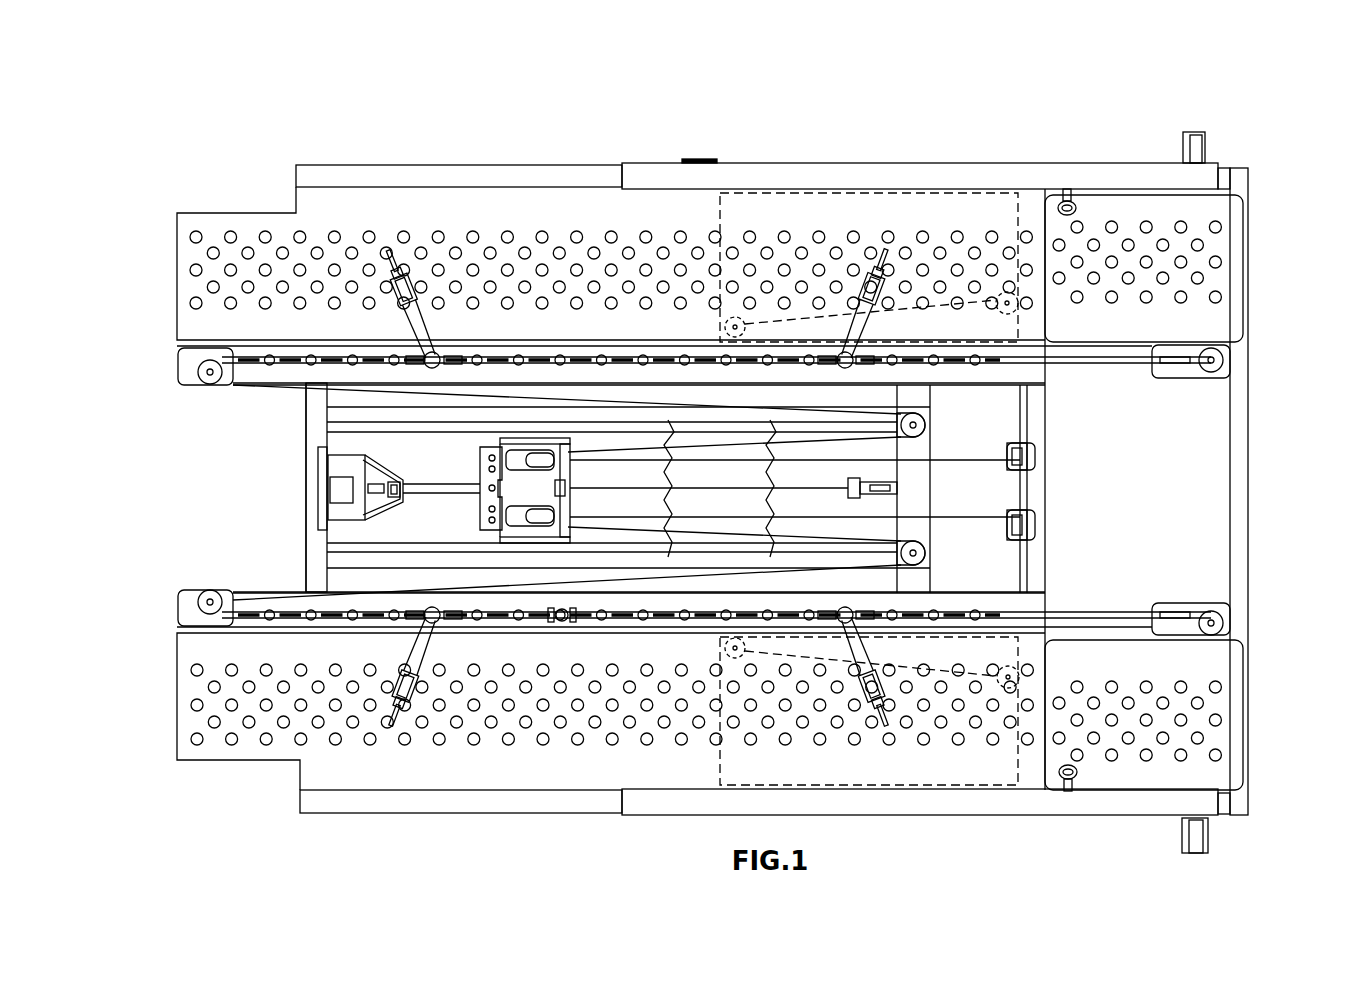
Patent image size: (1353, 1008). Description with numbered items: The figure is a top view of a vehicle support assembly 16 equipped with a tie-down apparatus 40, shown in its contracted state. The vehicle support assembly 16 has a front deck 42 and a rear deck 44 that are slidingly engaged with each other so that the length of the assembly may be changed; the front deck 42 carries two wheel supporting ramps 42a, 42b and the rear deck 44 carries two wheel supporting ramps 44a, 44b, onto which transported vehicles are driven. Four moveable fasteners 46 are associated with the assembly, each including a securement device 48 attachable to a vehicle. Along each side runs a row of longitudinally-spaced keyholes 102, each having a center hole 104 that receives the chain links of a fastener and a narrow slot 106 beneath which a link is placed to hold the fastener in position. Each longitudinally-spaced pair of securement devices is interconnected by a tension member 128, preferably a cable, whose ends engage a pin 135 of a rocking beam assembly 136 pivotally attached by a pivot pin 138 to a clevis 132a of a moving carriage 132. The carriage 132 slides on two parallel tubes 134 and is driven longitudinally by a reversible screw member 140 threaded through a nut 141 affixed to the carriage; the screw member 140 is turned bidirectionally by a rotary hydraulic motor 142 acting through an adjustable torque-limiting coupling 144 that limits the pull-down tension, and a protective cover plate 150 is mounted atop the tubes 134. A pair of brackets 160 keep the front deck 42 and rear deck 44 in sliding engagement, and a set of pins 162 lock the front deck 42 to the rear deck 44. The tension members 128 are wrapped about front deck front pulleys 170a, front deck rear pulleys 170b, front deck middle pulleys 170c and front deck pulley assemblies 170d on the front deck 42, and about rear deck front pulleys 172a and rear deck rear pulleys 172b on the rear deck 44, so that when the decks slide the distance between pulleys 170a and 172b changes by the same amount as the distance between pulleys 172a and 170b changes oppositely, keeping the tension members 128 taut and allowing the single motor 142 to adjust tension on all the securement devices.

The vehicle support assembly 16 is at (965, 133).
The tie-down apparatus 40 is at (529, 412).
The front deck 42 is at (557, 158).
The wheel supporting ramp 42a is at (493, 200).
The wheel supporting ramp 42b is at (497, 775).
The rear deck 44 is at (1140, 158).
The wheel supporting ramp 44a is at (1232, 227).
The wheel supporting ramp 44b is at (1232, 700).
The moveable fastener 46 is at (382, 233).
The securement device 48 is at (405, 285).
The keyhole 102 is at (670, 348).
The center hole 104 is at (563, 622).
The narrow slot 106 is at (552, 622).
The tension member 128 is at (698, 403).
The moving carriage 132 is at (570, 510).
The clevis 132a is at (485, 510).
The parallel tubes 134 is at (330, 420).
The pin 135 is at (498, 430).
The rocking beam assembly 136 is at (480, 527).
The pivot pin 138 is at (485, 470).
The reversible screw member 140 is at (422, 482).
The nut 141 is at (568, 488).
The rotary hydraulic motor 142 is at (335, 487).
The adjustable torque-limiting coupling 144 is at (380, 498).
The protective cover plate 150 is at (747, 504).
The bracket 160 is at (821, 178).
The pin 162 is at (1067, 200).
The front deck front pulley 170a is at (208, 385).
The front deck rear pulley 170b is at (1018, 303).
The front deck middle pulley 170c is at (968, 430).
The front deck pulley assembly 170d is at (1037, 456).
The rear deck front pulley 172a is at (745, 327).
The rear deck rear pulley 172b is at (1224, 360).